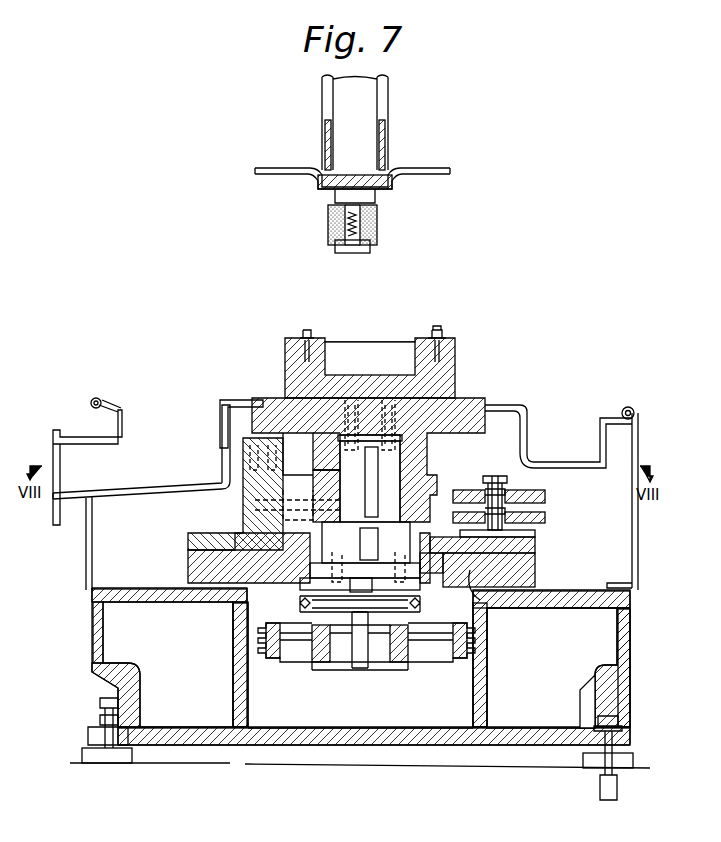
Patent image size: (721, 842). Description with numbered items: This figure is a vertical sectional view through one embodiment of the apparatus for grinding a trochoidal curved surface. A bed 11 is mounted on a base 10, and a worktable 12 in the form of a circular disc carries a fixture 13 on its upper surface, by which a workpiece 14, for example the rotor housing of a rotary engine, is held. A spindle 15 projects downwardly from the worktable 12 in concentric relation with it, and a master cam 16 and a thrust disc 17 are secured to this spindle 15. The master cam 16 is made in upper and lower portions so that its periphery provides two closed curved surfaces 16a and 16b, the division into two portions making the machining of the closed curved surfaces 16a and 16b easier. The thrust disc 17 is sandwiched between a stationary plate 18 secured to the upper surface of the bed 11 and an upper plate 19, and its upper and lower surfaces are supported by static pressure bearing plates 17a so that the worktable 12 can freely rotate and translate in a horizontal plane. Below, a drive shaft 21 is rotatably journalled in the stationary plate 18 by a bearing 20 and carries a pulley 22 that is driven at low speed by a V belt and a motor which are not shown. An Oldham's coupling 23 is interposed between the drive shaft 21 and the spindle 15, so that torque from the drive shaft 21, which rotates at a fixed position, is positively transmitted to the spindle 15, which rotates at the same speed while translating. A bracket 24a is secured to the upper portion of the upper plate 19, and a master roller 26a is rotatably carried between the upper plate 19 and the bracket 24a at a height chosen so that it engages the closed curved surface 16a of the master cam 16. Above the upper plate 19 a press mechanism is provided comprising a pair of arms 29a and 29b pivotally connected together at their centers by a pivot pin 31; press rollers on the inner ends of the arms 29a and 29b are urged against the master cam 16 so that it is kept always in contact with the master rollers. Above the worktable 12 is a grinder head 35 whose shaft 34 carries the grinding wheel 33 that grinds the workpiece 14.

The base 10 is at (634, 760).
The bed 11 is at (622, 638).
The worktable 12 is at (468, 403).
The fixture 13 is at (440, 340).
The workpiece 14 is at (420, 340).
The spindle 15 is at (345, 458).
The master cam 16 is at (333, 489).
The closed curved surface 16a is at (300, 518).
The closed curved surface 16b is at (240, 403).
The thrust disc 17 is at (505, 573).
The static pressure bearing plates 17a is at (472, 600).
The stationary plate 18 is at (190, 568).
The upper plate 19 is at (535, 550).
The bearing 20 is at (400, 665).
The drive shaft 21 is at (334, 672).
The pulley 22 is at (460, 662).
The Oldham's coupling 23 is at (388, 625).
The bracket 24a is at (245, 452).
The master roller 26a is at (255, 505).
The arm 29a is at (536, 492).
The arm 29b is at (535, 521).
The pivot pin 31 is at (490, 478).
The grinding wheel 33 is at (374, 237).
The shaft 34 is at (368, 136).
The grinder head 35 is at (420, 163).